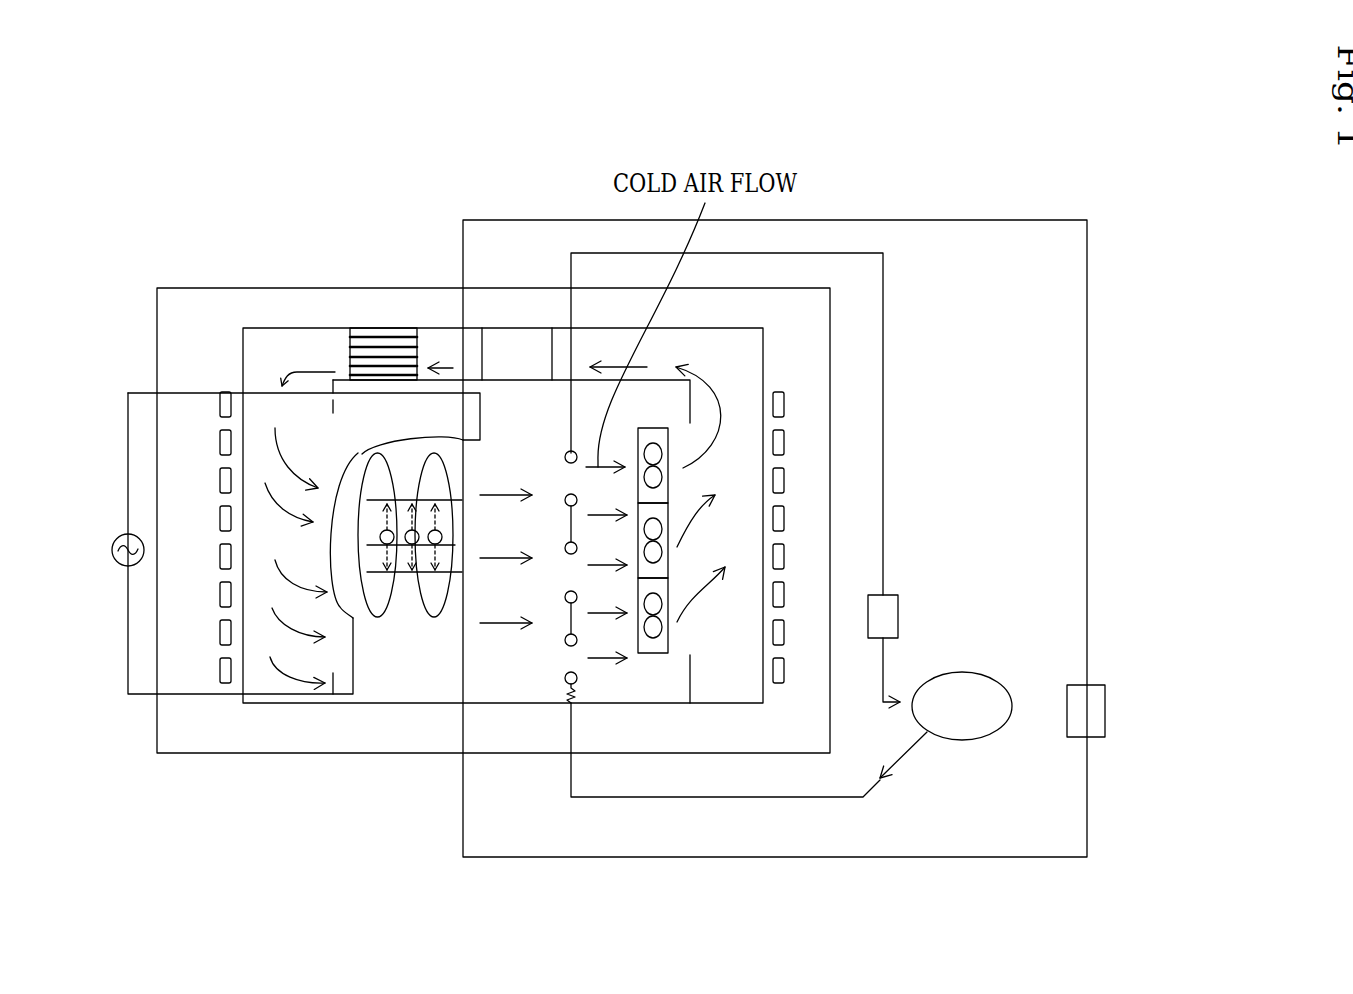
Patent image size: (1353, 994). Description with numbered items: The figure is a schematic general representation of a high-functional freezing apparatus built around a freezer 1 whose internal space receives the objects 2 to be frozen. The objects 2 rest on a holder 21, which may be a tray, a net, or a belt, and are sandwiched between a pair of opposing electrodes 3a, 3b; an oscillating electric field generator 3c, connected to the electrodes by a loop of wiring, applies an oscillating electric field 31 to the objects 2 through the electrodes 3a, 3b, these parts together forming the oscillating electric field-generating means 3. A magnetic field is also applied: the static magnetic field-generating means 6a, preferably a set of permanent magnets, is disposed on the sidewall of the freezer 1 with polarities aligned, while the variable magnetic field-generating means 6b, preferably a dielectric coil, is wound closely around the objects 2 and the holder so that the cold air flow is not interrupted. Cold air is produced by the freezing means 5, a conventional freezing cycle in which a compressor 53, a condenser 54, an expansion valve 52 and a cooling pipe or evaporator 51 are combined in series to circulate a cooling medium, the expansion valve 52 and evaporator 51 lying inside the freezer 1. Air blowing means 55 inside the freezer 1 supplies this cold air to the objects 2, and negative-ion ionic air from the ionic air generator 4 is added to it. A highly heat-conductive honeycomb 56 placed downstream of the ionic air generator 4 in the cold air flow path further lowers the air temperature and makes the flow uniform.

The freezer 1 is at (208, 284).
The objects to be frozen 2 is at (443, 537).
The oscillating electric field-generating means 3 is at (1103, 572).
The electrode 3a is at (407, 574).
The electrode 3b is at (434, 535).
The oscillating electric field generator 3c is at (1105, 722).
The ionic air generator 4 is at (517, 340).
The freezing means 5 is at (926, 752).
The static magnetic field-generating means 6a is at (227, 690).
The variable magnetic field-generating means 6b is at (340, 450).
The holder 21 is at (362, 547).
The oscillating electric field 31 is at (470, 497).
The cooling pipe (evaporator) 51 is at (565, 676).
The expansion valve 52 is at (571, 703).
The compressor 53 is at (898, 602).
The condenser 54 is at (982, 672).
The air blowing means 55 is at (665, 493).
The honeycomb 56 is at (390, 345).